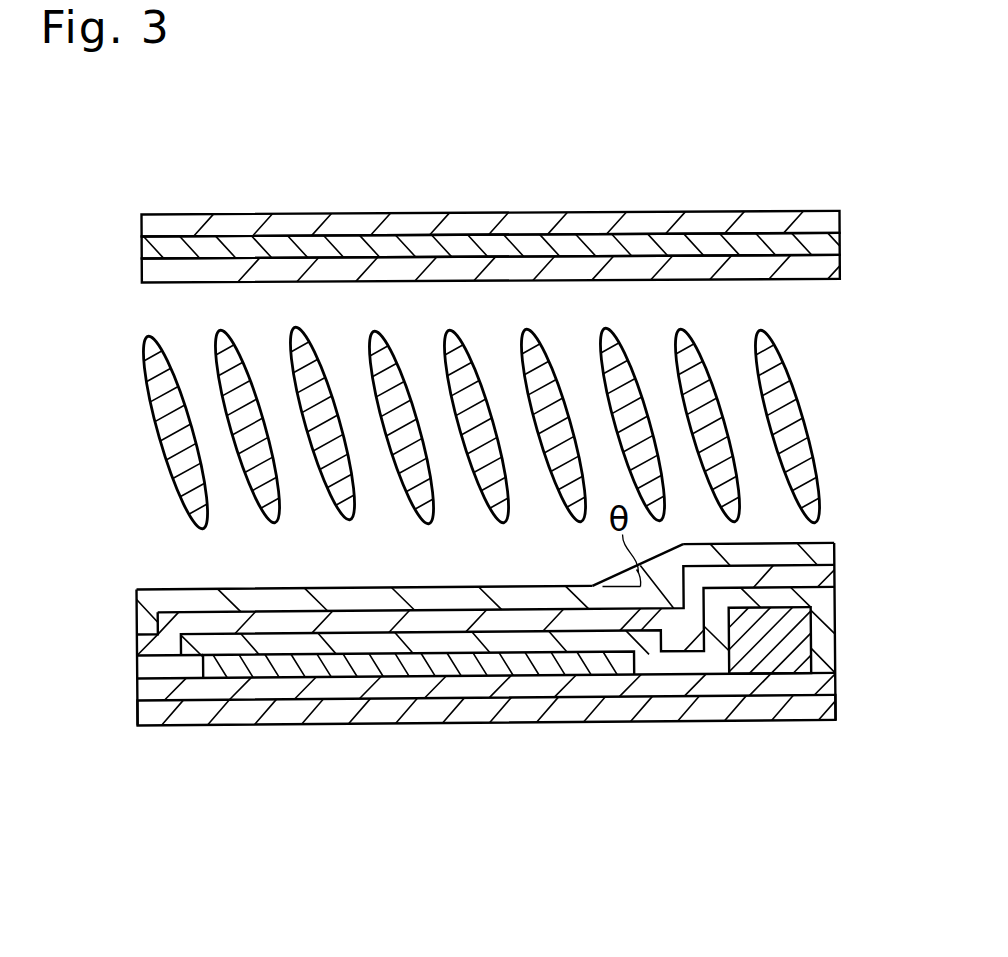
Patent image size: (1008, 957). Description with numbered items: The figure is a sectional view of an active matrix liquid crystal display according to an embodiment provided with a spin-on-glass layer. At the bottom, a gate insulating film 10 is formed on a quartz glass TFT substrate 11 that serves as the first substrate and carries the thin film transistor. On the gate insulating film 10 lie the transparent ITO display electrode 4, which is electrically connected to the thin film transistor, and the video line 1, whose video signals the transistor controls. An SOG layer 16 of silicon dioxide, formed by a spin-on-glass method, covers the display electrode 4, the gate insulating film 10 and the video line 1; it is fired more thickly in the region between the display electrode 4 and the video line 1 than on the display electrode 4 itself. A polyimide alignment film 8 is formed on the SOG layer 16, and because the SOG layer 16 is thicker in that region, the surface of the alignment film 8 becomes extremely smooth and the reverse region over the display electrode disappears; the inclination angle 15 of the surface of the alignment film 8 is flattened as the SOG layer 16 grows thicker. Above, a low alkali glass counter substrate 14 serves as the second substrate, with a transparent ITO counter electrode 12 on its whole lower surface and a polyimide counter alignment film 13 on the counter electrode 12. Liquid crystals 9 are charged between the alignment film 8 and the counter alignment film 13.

The video line 1 is at (810, 632).
The display electrode 4 is at (295, 667).
The alignment film 8 is at (834, 545).
The liquid crystals 9 is at (788, 358).
The gate insulating film 10 is at (490, 690).
The TFT substrate 11 is at (708, 710).
The counter electrode 12 is at (480, 240).
The counter alignment film 13 is at (840, 262).
The counter substrate 14 is at (168, 223).
The inclination angle 15 is at (617, 577).
The SOG layer 16 is at (828, 577).